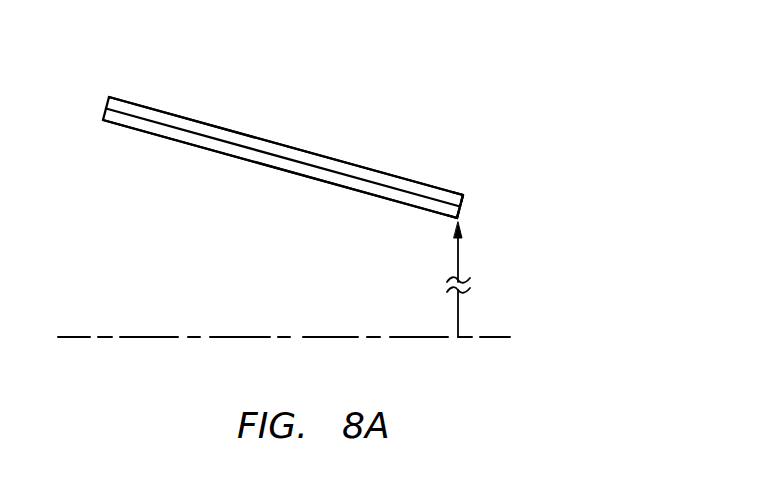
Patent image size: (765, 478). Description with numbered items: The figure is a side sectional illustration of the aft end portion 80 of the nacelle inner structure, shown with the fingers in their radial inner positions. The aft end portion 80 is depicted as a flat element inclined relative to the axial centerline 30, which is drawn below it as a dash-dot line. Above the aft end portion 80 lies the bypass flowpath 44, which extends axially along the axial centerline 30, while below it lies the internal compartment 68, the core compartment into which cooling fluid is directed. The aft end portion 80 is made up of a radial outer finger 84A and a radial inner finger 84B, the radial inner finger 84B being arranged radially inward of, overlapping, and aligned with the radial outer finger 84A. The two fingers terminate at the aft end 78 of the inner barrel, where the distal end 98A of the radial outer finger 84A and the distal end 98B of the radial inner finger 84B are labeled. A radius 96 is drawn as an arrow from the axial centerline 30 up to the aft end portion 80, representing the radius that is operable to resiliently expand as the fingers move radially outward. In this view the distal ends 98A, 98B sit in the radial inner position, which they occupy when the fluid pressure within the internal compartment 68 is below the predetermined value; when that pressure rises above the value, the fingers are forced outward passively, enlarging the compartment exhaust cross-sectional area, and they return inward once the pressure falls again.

The bypass flowpath 44 is at (200, 62).
The internal compartment 68 is at (162, 237).
The aft end portion 80 is at (291, 91).
The radial outer finger 84A is at (367, 160).
The radial inner finger 84B is at (352, 190).
The distal end 98A is at (464, 197).
The aft end 78 is at (463, 207).
The distal end 98B is at (460, 215).
The radius 96 is at (458, 262).
The axial centerline 30 is at (498, 338).